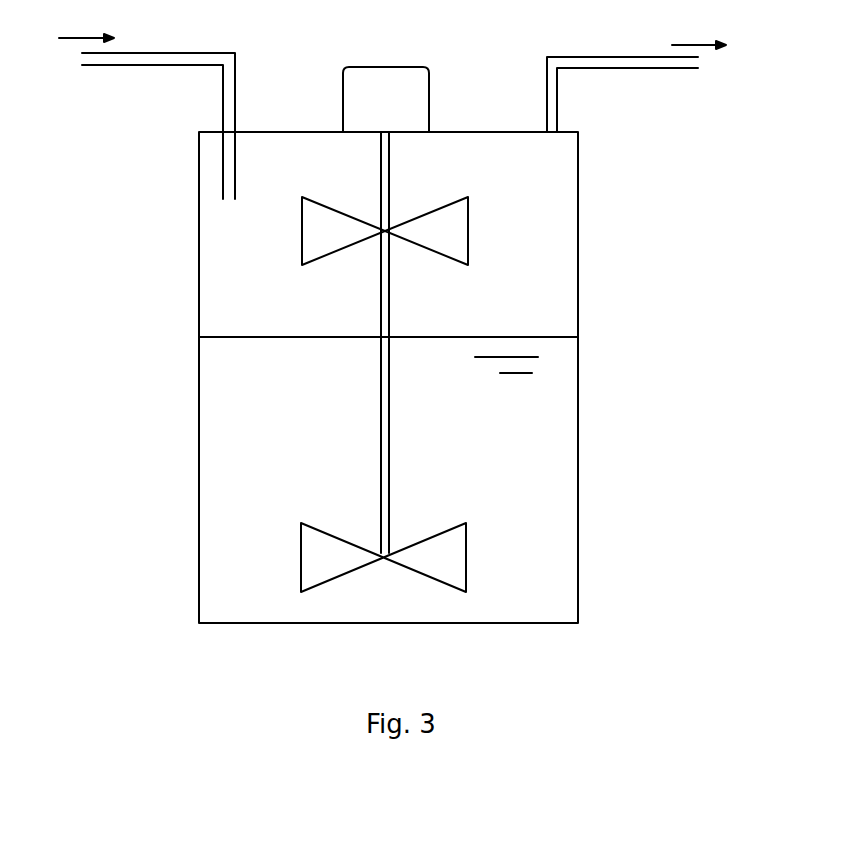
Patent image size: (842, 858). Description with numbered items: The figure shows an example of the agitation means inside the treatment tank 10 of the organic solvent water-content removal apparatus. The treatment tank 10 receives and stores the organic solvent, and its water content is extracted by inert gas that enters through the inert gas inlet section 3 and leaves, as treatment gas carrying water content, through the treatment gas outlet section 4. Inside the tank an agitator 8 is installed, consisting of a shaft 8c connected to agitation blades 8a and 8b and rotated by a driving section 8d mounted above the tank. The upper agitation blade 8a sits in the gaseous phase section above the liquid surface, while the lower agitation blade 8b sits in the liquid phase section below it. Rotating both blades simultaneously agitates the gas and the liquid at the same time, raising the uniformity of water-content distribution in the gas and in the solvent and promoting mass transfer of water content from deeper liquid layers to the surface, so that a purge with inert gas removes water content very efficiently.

The inert gas inlet section 3 is at (175, 52).
The treatment gas outlet section 4 is at (597, 55).
The agitator 8 is at (394, 308).
The agitation blade 8a is at (468, 230).
The agitation blade 8b is at (467, 553).
The shaft 8c is at (389, 400).
The driving section 8d is at (395, 64).
The treatment tank 10 is at (577, 377).